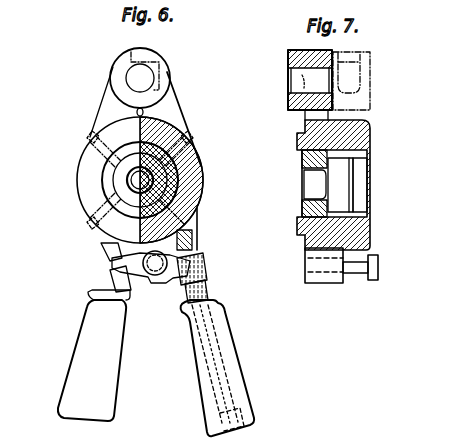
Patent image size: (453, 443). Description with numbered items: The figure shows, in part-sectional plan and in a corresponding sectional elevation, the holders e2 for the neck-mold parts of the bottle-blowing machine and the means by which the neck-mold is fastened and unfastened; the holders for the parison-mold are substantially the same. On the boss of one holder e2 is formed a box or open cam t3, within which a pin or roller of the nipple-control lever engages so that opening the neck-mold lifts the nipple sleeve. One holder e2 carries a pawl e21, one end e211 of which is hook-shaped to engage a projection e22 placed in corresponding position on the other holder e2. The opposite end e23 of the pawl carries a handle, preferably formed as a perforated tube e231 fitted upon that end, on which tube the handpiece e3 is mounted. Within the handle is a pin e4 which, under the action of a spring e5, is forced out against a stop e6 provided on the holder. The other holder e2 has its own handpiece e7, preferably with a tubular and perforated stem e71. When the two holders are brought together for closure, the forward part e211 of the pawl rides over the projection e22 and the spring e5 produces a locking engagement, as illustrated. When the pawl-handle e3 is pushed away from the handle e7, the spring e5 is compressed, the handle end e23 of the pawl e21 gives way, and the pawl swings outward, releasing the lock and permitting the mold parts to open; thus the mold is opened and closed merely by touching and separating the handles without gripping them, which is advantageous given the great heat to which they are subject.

In FIG. 6, the box or open cam t3 is at (163, 63).
In FIG. 7, the box or open cam t3 is at (371, 68).
In FIG. 6, the holder e2 is at (86, 143).
In FIG. 7, the holder e2 is at (371, 134).
In FIG. 6, the stop e6 is at (197, 244).
In FIG. 6, the pin e4 is at (195, 253).
In FIG. 6, the projection e22 is at (126, 250).
In FIG. 6, the hook-shaped end of pawl e211 is at (120, 264).
In FIG. 6, the pawl e21 is at (170, 290).
In FIG. 6, the handle end of pawl e23 is at (206, 267).
In FIG. 6, the perforated tube e231 is at (209, 288).
In FIG. 6, the tubular perforated stem e71 is at (113, 289).
In FIG. 6, the handpiece e7 is at (80, 372).
In FIG. 6, the handpiece e3 is at (232, 369).
In FIG. 6, the spring e5 is at (217, 322).